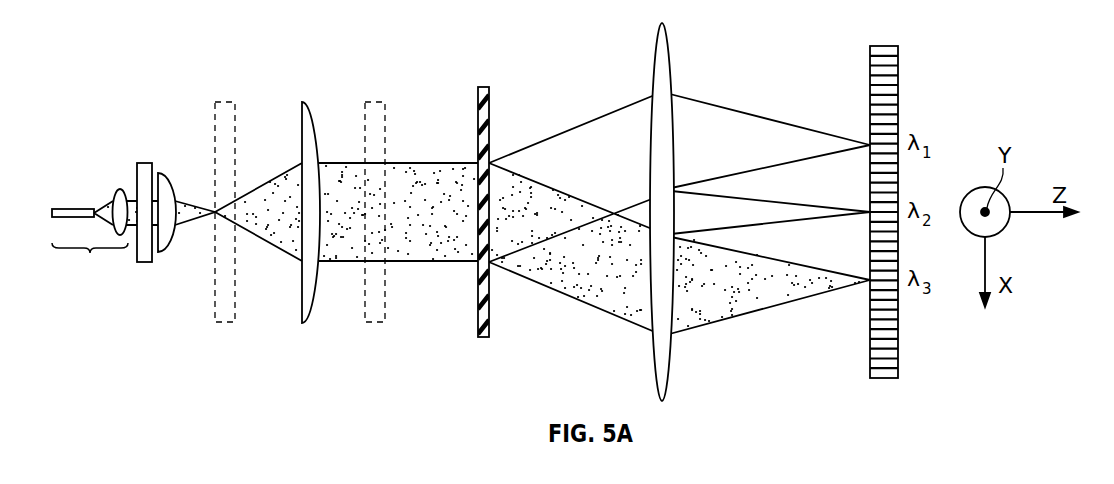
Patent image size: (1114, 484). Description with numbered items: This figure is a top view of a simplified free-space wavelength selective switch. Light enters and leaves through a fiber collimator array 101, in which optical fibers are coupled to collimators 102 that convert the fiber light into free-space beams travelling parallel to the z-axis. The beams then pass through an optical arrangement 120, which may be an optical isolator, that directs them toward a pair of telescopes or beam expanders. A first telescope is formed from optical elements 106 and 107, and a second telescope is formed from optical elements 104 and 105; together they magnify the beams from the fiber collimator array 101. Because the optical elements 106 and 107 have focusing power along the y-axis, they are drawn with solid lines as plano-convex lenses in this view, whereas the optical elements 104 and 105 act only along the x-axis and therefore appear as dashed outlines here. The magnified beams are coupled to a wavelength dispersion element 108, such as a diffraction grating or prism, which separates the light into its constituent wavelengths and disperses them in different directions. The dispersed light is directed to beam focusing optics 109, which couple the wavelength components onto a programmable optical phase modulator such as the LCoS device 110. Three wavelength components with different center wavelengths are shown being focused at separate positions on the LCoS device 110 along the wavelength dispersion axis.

The fiber collimator array 101 is at (73, 208).
The collimators 102 is at (118, 189).
The optical arrangement 120 is at (143, 262).
The optical element 106 is at (173, 173).
The optical element 104 is at (222, 323).
The optical element 107 is at (302, 102).
The optical element 105 is at (372, 323).
The wavelength dispersion element 108 is at (483, 87).
The beam focusing optics 109 is at (654, 60).
The LCoS device 110 is at (882, 46).